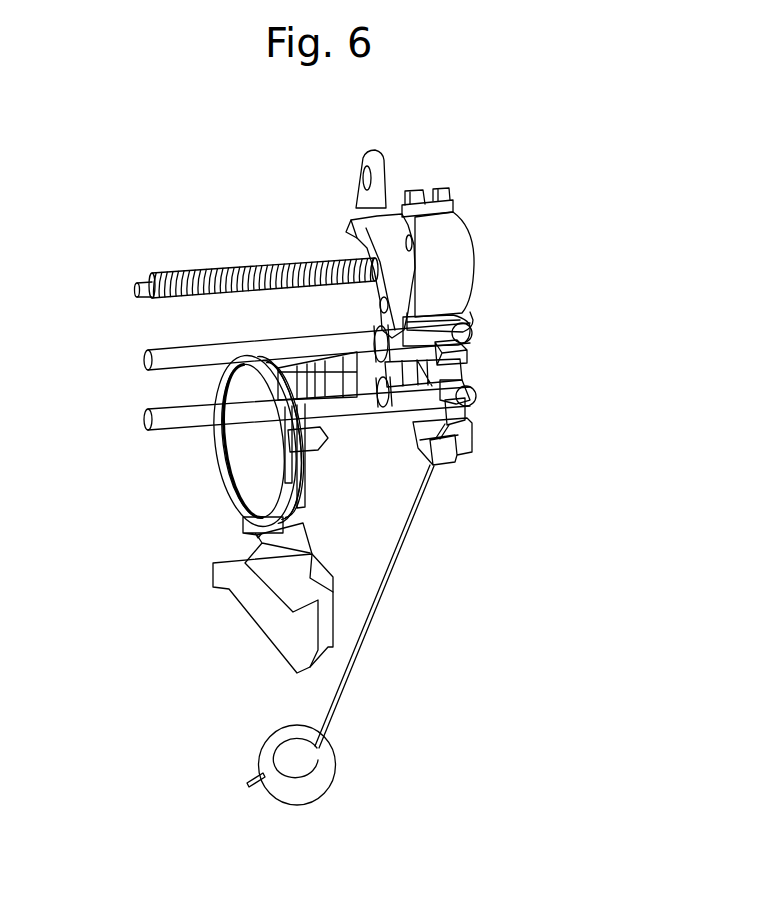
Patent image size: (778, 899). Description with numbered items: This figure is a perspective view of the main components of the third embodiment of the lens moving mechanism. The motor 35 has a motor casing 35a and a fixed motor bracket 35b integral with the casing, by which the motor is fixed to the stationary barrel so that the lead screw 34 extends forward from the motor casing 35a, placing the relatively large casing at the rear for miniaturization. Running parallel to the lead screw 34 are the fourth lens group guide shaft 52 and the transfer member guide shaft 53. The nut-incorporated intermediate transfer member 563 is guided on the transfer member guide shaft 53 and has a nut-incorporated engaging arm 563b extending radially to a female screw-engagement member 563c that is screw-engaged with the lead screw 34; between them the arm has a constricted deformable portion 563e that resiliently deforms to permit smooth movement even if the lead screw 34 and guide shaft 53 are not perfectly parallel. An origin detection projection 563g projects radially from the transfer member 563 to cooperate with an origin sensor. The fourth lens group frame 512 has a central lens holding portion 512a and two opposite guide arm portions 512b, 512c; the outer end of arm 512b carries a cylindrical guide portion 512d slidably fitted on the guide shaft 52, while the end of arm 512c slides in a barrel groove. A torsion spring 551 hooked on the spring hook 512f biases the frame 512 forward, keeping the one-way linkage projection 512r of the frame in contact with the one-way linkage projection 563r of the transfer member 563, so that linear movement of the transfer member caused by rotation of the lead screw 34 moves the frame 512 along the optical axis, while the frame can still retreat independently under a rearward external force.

The lead screw 34 is at (184, 274).
The motor 35 is at (474, 231).
The motor casing 35a is at (461, 241).
The fixed motor bracket 35b is at (381, 178).
The fourth lens group guide shaft 52 is at (150, 412).
The transfer member guide shaft 53 is at (148, 348).
The fourth lens group frame 512 is at (206, 502).
The central lens holding portion 512a is at (243, 513).
The guide arm portion 512b is at (320, 433).
The guide arm portion 512c is at (308, 557).
The cylindrical guide portion 512d is at (460, 378).
The spring hook 512f is at (455, 462).
The one-way linkage projection 512r is at (460, 367).
The torsion spring 551 is at (335, 710).
The nut-incorporated intermediate transfer member 563 is at (443, 323).
The nut-incorporated engaging arm 563b is at (423, 303).
The female screw-engagement member 563c is at (320, 263).
The deformable portion 563e is at (380, 307).
The origin detection projection 563g is at (467, 352).
The one-way linkage projection 563r is at (462, 407).